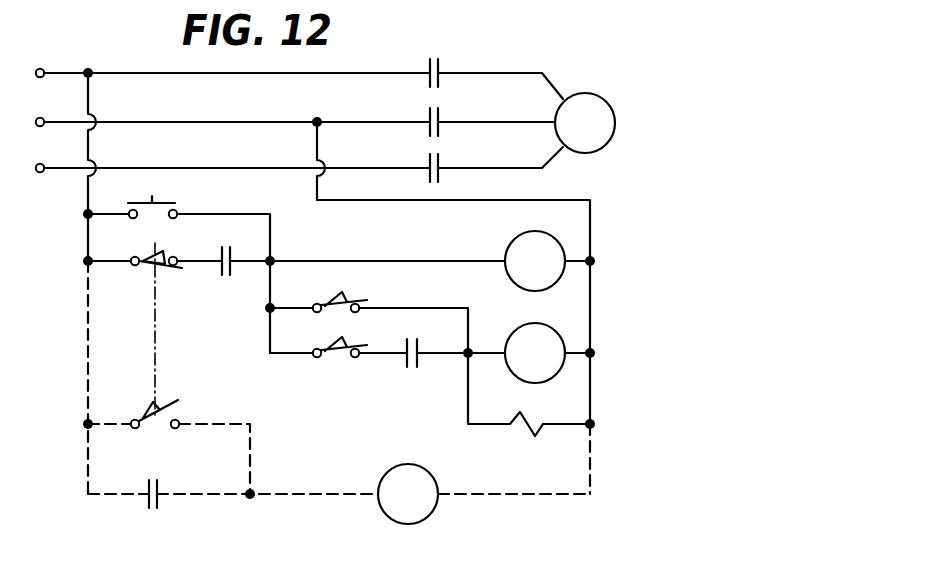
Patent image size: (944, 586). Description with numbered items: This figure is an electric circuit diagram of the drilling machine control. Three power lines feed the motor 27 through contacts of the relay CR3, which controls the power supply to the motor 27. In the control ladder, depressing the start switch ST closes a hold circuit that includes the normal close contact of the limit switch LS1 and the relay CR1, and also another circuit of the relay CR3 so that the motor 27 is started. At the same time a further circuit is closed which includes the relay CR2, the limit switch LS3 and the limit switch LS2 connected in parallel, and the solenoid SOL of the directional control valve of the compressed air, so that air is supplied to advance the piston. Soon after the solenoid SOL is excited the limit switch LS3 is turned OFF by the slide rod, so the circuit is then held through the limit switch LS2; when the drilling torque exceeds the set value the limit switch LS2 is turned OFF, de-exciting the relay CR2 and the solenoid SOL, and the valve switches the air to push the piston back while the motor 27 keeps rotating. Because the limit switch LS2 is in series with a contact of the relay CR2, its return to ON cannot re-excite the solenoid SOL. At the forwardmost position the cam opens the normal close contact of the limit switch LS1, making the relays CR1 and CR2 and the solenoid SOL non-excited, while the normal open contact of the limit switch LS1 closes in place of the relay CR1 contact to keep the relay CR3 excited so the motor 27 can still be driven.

The motor 27 is at (605, 133).
The relay CR3 is at (434, 283).
The relay CR1 is at (357, 385).
The relay CR2 is at (485, 360).
The start switch ST is at (166, 200).
The limit switch LS1 is at (182, 342).
The limit switch LS2 is at (340, 367).
The limit switch LS3 is at (353, 291).
The solenoid SOL is at (526, 440).